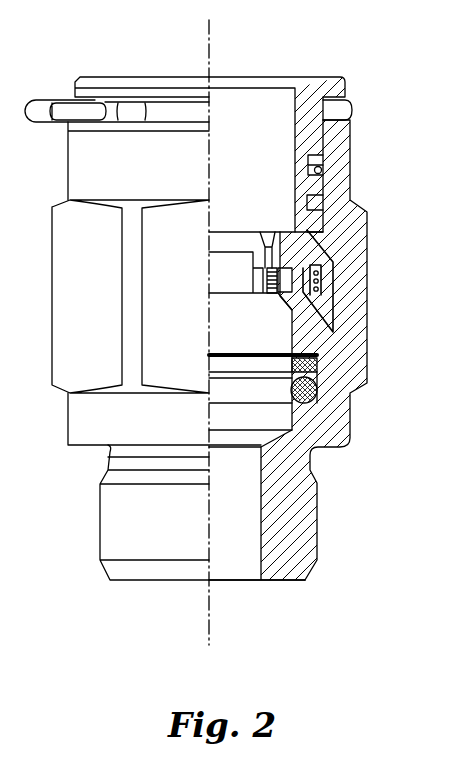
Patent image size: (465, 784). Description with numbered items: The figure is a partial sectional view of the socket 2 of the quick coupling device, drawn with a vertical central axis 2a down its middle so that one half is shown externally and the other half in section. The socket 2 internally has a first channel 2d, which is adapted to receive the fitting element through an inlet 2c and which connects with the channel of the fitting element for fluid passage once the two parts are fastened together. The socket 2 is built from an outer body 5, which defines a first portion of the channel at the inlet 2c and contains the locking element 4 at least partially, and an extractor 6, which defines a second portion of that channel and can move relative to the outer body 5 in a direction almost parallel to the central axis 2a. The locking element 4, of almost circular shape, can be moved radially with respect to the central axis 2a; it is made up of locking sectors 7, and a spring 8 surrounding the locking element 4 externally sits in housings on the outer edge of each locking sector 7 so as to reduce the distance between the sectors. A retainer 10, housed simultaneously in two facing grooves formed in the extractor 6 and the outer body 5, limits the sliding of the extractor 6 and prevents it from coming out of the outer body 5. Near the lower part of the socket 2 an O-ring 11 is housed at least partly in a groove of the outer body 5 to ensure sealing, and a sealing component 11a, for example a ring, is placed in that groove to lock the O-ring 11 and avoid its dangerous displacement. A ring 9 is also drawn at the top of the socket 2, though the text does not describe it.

The socket 2 is at (100, 612).
The central axis 2a is at (209, 628).
The inlet 2c is at (238, 77).
The first channel 2d is at (262, 176).
The locking element 4 is at (334, 268).
The outer body 5 is at (300, 536).
The extractor 6 is at (320, 90).
The locking sector 7 is at (256, 268).
The spring 8 is at (318, 279).
The ring 9 is at (42, 108).
The retainer 10 is at (324, 171).
The O-ring 11 is at (308, 392).
The sealing component 11a is at (318, 364).